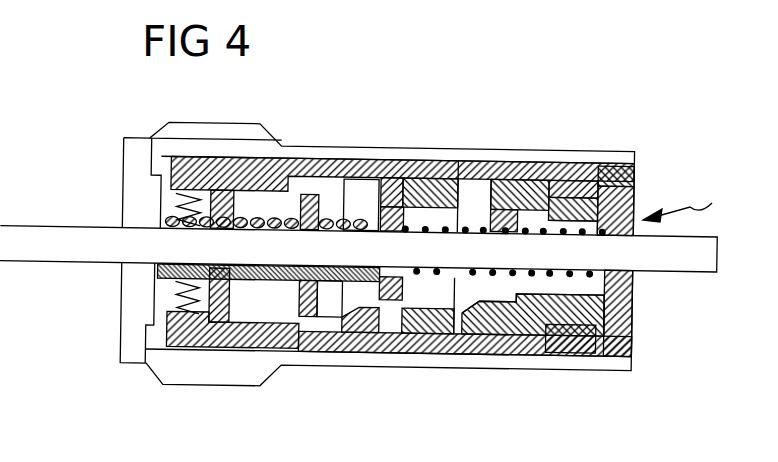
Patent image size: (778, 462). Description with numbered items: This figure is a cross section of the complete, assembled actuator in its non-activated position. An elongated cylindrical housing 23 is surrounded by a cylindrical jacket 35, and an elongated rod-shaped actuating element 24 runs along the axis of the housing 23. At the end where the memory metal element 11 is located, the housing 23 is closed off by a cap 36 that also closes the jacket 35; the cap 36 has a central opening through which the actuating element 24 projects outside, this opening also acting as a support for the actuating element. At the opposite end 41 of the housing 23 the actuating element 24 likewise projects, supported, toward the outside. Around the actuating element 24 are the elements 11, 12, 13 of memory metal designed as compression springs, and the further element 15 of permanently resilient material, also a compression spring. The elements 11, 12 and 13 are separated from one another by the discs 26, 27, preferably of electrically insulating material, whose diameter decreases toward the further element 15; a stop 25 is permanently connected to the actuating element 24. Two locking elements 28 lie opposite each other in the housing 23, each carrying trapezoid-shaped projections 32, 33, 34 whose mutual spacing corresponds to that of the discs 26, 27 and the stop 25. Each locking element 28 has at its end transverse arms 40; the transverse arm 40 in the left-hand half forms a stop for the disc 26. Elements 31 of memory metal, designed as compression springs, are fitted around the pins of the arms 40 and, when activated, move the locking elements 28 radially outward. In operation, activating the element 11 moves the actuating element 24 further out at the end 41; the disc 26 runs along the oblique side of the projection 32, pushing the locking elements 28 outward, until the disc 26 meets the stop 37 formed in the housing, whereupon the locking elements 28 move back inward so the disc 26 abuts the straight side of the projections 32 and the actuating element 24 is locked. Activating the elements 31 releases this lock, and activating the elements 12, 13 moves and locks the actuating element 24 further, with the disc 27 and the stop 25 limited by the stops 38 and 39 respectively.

The element of memory metal 11 is at (203, 165).
The element of memory metal 12 is at (287, 165).
The element of memory metal 13 is at (344, 190).
The further element of permanently resilient material 15 is at (565, 228).
The housing 23 is at (633, 325).
The actuating element 24 is at (680, 262).
The stop 25 is at (387, 295).
The disc 26 is at (220, 318).
The disc 27 is at (307, 318).
The locking element 28 is at (636, 174).
The element of memory metal 31 is at (162, 199).
The trapezoid-shaped projection 32 is at (257, 184).
The trapezoid-shaped projection 33 is at (367, 200).
The trapezoid-shaped projection 34 is at (492, 218).
The cylindrical jacket 35 is at (477, 355).
The cap 36 is at (128, 150).
The stop 37 is at (292, 205).
The stop 38 is at (440, 188).
The stop 39 is at (528, 210).
The transverse arm 40 is at (190, 187).
The opposite end 41 is at (697, 205).